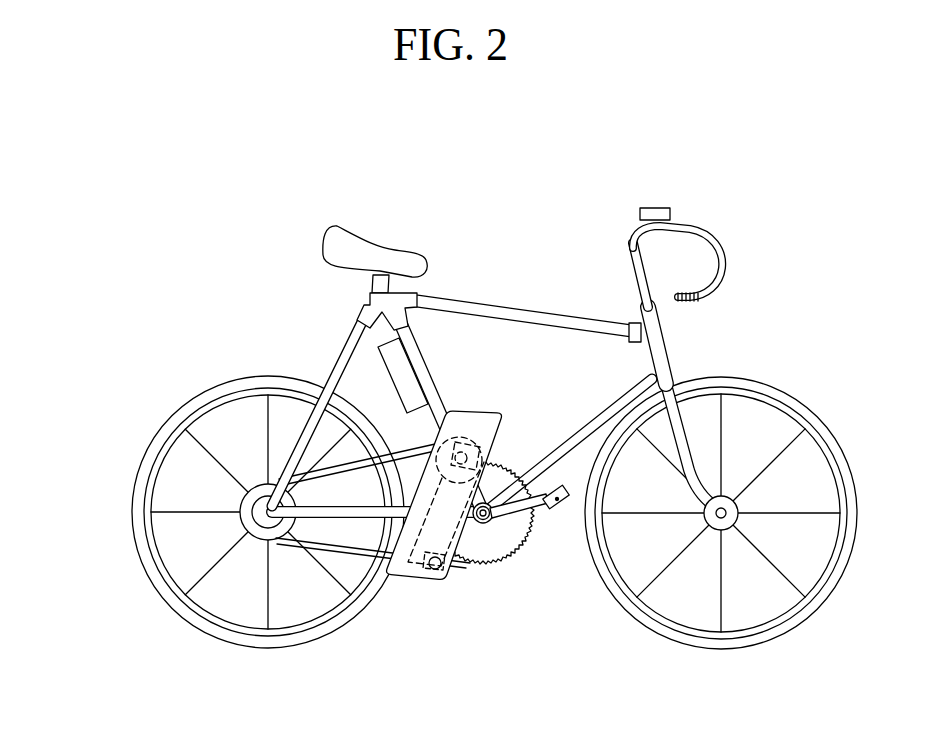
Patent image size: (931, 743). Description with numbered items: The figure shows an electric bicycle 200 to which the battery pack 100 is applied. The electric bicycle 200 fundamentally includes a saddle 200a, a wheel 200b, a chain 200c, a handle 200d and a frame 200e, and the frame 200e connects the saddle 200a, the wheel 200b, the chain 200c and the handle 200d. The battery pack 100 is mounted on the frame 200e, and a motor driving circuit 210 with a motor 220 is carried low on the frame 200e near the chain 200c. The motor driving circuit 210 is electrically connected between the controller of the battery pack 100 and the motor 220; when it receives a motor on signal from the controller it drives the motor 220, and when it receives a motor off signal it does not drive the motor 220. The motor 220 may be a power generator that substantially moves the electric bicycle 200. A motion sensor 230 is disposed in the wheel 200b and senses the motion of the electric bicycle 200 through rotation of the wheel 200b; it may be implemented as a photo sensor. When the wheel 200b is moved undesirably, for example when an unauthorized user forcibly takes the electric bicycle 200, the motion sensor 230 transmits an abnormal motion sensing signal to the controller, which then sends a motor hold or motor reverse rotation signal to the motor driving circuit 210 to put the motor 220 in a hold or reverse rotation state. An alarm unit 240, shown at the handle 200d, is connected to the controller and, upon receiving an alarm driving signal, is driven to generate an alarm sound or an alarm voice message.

The battery pack 100 is at (392, 358).
The electric bicycle 200 is at (822, 195).
The saddle 200a is at (383, 250).
The wheel 200b is at (142, 542).
The chain 200c is at (458, 562).
The handle 200d is at (698, 230).
The frame 200e is at (422, 372).
The motor driving circuit 210 is at (408, 583).
The motor 220 is at (476, 443).
The motion sensor 230 is at (260, 533).
The alarm unit 240 is at (653, 208).